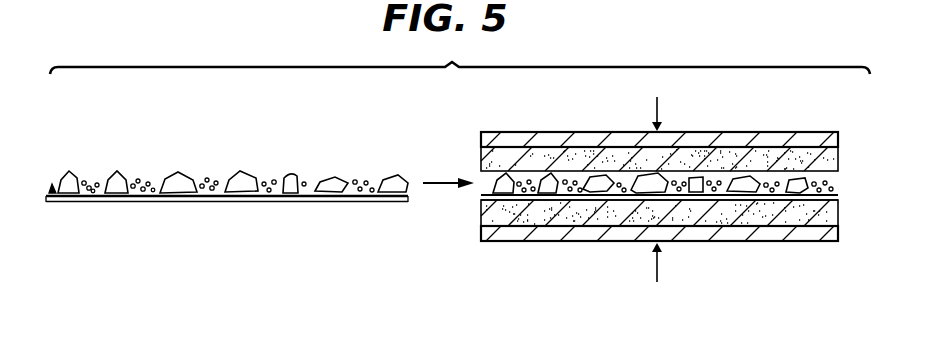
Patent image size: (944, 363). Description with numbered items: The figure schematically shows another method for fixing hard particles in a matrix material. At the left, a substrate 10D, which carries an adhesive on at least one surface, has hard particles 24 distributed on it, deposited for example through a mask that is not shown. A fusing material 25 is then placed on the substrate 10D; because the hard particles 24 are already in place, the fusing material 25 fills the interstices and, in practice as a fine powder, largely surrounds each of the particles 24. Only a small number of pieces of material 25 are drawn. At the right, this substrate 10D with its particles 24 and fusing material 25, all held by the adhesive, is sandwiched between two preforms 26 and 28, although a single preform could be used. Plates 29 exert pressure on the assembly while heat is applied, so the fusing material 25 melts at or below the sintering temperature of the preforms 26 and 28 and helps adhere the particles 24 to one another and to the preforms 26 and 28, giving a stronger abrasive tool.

The substrate 10D is at (150, 202).
The hard particles 24 is at (180, 176).
The fusing material 25 is at (362, 180).
The preform 26 is at (736, 150).
The preform 28 is at (688, 212).
The plates 29 is at (550, 142).